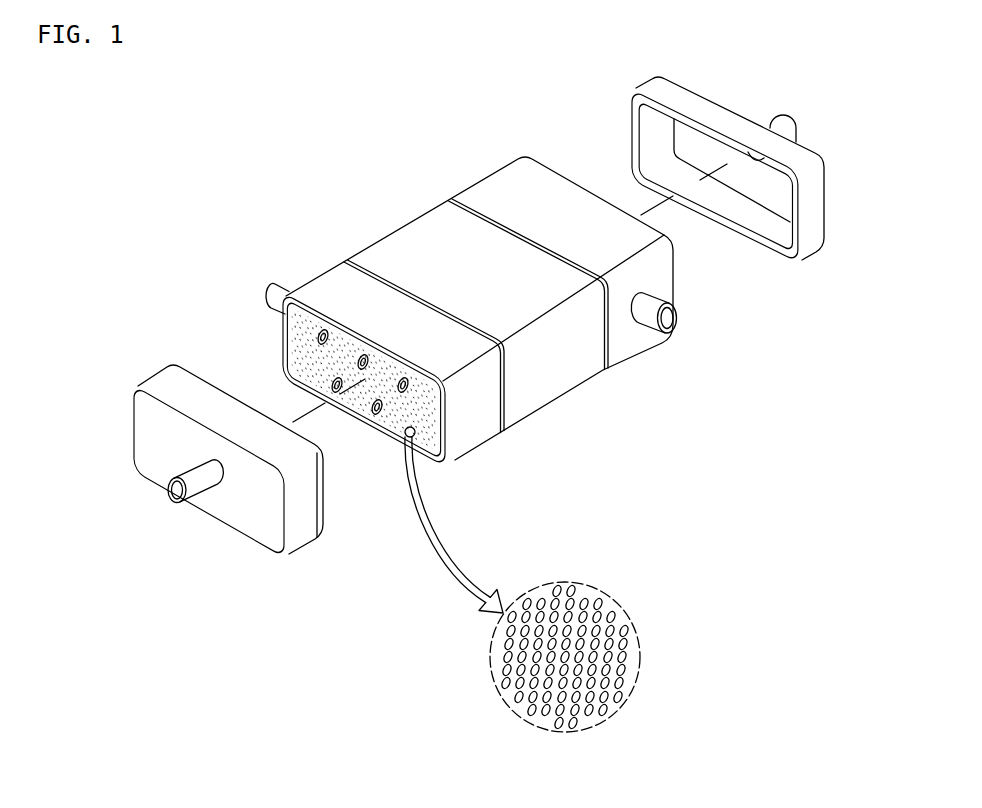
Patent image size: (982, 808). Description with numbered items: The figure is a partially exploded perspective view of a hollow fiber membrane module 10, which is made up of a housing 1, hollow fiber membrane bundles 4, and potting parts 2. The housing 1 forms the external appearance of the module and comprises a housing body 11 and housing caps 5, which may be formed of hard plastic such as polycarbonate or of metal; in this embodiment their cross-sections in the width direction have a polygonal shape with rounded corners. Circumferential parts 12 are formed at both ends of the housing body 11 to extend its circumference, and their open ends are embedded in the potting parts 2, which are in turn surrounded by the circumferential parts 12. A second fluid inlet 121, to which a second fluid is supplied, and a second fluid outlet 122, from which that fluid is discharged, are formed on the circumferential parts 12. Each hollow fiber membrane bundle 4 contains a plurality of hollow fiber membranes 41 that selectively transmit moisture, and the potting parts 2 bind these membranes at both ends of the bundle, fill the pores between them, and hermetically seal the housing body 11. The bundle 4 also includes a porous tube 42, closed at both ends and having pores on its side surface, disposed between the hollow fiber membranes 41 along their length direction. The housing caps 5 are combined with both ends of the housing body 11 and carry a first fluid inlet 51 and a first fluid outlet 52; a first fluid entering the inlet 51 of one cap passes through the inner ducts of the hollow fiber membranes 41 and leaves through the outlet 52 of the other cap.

The hollow fiber membrane module 10 is at (262, 95).
The housing 1 is at (416, 214).
The housing body 11 is at (553, 360).
The circumferential part 12 is at (467, 420).
The second fluid inlet 121 is at (277, 293).
The second fluid outlet 122 is at (653, 305).
The potting part 2 is at (293, 340).
The hollow fiber membrane bundle 4 is at (313, 363).
The hollow fiber membrane 41 is at (614, 619).
The porous tube 42 is at (403, 389).
The housing cap 5 is at (297, 535).
The first fluid inlet 51 is at (197, 480).
The first fluid outlet 52 is at (782, 127).